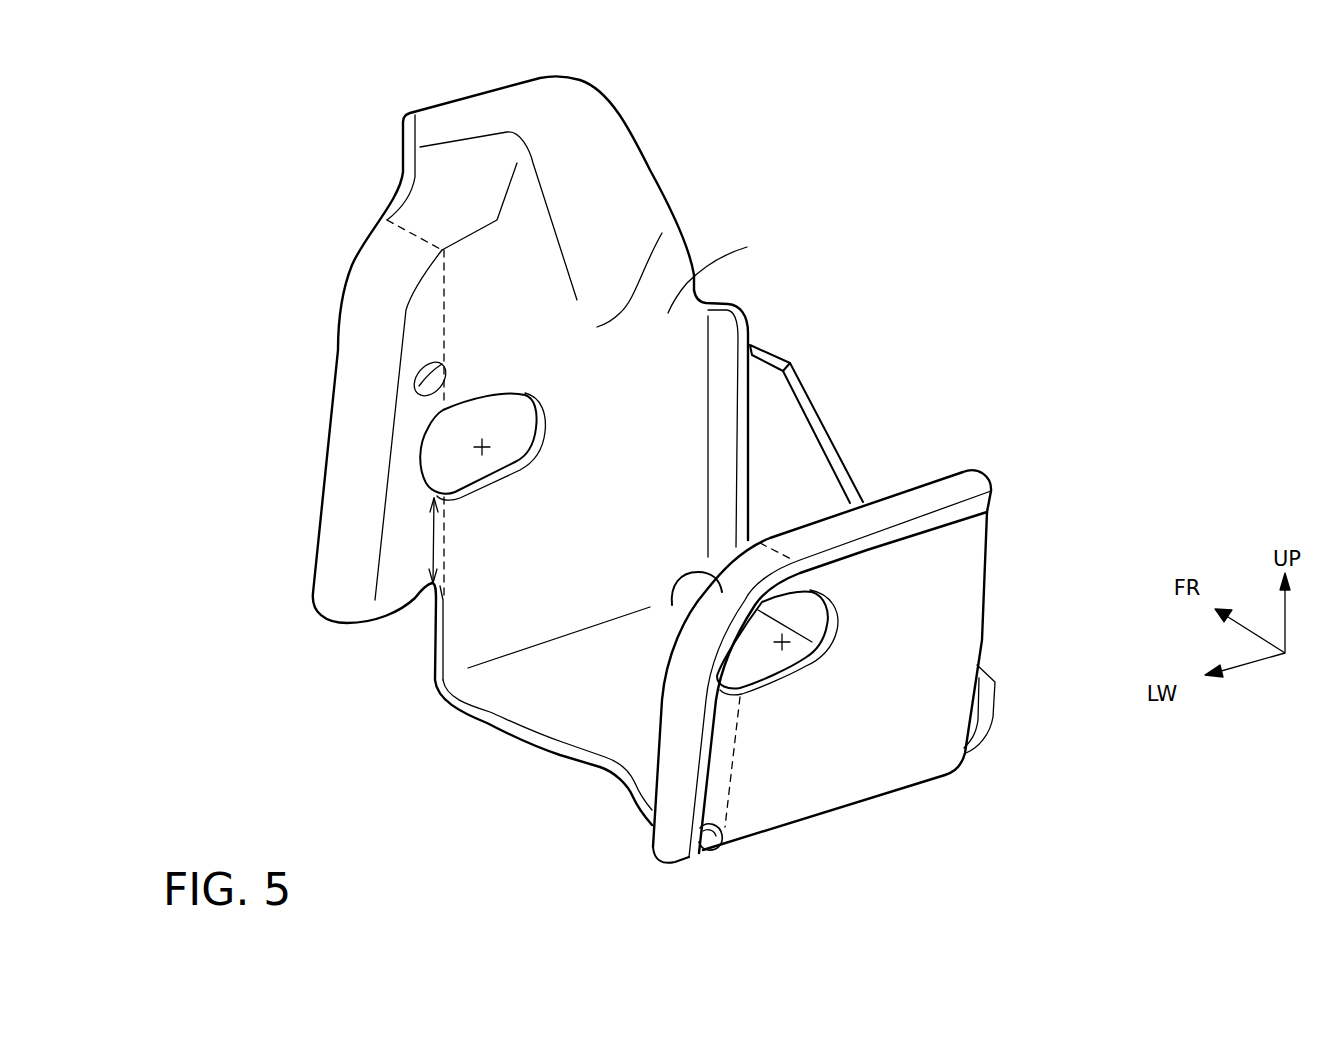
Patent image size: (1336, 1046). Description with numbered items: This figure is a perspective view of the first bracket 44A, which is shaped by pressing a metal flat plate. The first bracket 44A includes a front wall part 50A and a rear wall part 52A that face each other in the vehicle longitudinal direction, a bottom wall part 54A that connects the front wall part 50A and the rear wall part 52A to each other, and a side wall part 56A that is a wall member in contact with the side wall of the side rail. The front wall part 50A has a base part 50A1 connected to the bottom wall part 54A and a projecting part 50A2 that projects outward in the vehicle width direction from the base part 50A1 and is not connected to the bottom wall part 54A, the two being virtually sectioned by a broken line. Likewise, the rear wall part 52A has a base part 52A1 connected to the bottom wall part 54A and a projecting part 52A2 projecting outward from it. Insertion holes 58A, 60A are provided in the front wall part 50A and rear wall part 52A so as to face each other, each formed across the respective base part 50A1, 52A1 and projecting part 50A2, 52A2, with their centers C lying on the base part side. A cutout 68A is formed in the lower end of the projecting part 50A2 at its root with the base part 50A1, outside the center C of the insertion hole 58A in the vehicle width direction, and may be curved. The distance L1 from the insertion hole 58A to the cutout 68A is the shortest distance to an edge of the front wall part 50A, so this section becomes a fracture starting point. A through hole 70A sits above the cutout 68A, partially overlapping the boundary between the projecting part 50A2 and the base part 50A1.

The first bracket 44A is at (315, 217).
The front wall part 50A is at (652, 172).
The base part 50A1 is at (667, 317).
The projecting part 50A2 is at (410, 503).
The rear wall part 52A is at (987, 593).
The base part 52A1 is at (840, 763).
The projecting part 52A2 is at (713, 785).
The bottom wall part 54A is at (570, 697).
The side wall part 56A is at (783, 447).
The insertion hole 58A is at (450, 460).
The insertion hole 60A is at (763, 687).
The cutout 68A is at (427, 596).
The through hole 70A is at (420, 363).
The center C is at (483, 450).
The distance L1 is at (417, 540).